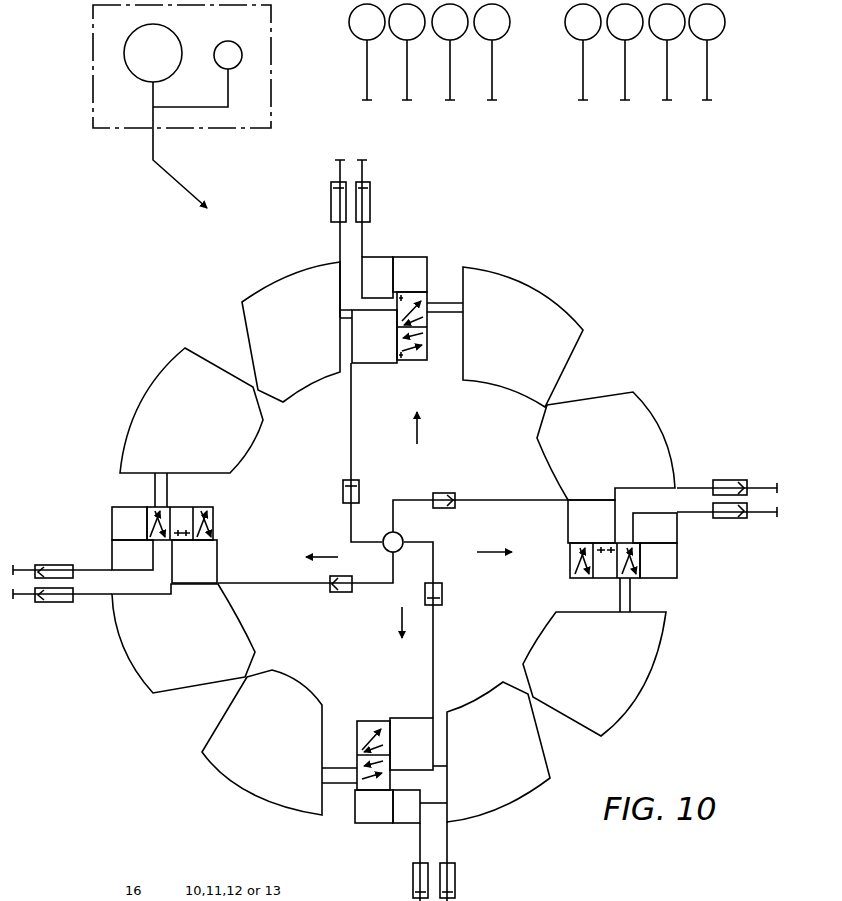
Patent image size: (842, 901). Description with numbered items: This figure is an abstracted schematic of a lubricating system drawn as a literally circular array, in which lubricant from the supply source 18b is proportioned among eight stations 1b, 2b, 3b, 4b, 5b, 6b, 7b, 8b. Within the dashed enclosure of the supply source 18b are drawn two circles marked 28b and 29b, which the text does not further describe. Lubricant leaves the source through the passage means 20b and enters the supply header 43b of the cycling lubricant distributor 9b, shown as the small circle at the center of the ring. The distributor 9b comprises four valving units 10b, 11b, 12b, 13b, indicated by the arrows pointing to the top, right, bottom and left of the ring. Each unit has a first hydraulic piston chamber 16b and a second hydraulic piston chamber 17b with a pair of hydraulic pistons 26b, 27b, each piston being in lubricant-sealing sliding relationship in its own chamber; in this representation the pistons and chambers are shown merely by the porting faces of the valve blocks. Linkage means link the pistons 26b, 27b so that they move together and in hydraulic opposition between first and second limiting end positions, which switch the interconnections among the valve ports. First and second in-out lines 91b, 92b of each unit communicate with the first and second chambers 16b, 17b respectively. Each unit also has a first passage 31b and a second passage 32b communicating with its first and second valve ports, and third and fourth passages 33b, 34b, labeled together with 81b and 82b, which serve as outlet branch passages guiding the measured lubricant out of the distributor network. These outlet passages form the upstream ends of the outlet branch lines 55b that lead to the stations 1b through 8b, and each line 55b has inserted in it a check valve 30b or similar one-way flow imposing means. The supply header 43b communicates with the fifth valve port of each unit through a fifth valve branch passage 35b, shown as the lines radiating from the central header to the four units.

The supply source 18b is at (93, 96).
The motor 28b is at (153, 53).
The controller 29b is at (238, 43).
The passage means 20b is at (183, 190).
The station 1b is at (367, 52).
The station 2b is at (407, 52).
The station 3b is at (450, 52).
The station 4b is at (492, 52).
The station 5b is at (583, 52).
The station 6b is at (625, 52).
The station 7b is at (667, 52).
The station 8b is at (707, 52).
The cycling lubricant distributor 9b is at (572, 302).
The outlet branch lines 55b is at (367, 57).
The check valve 30b is at (331, 207).
The first hydraulic piston chamber 16b is at (412, 258).
The first in-out line 91b is at (372, 258).
The first hydraulic piston 26b is at (428, 300).
The second hydraulic piston 27b is at (402, 362).
The second hydraulic piston chamber 17b is at (425, 372).
The second in-out line 92b is at (375, 365).
The first passage 31b is at (463, 302).
The second passage 32b is at (463, 358).
The third passage 33b is at (398, 545).
The passage 81b is at (340, 288).
The fourth passage 34b is at (377, 543).
The passage 82b is at (352, 321).
The fifth valve branch passage 35b is at (351, 447).
The supply header 43b is at (403, 538).
The valving unit 10b is at (474, 552).
The valving unit 11b is at (419, 438).
The valving unit 12b is at (341, 557).
The valving unit 13b is at (401, 614).